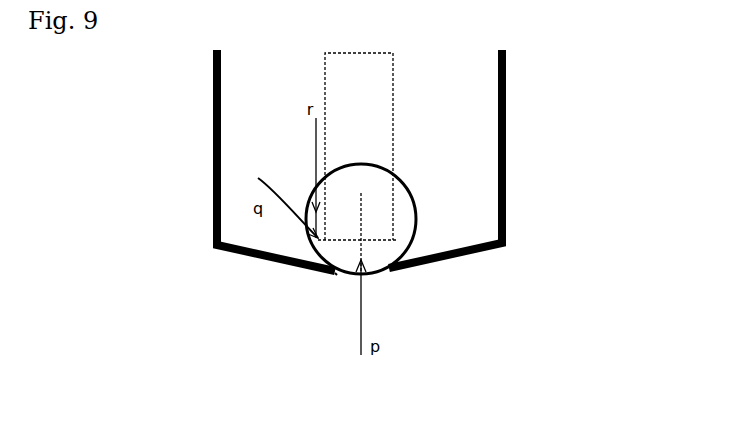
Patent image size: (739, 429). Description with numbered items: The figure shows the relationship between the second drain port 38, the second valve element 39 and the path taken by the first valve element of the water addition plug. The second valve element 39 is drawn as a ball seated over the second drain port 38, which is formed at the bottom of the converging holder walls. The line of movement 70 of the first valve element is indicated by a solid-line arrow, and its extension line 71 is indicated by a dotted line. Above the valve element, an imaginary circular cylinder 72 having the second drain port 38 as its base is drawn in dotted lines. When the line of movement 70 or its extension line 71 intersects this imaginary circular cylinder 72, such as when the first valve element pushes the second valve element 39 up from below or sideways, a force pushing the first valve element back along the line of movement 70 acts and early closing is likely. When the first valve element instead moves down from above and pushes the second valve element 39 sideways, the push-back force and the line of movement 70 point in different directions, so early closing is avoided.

The second drain port 38 is at (335, 277).
The second valve element 39 is at (378, 165).
The line of movement 70 is at (316, 143).
The extension line 71 is at (363, 218).
The imaginary circular cylinder 72 is at (375, 52).